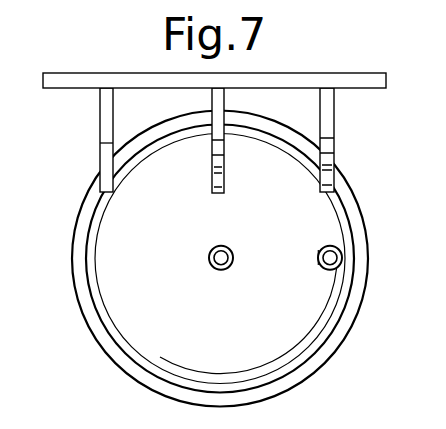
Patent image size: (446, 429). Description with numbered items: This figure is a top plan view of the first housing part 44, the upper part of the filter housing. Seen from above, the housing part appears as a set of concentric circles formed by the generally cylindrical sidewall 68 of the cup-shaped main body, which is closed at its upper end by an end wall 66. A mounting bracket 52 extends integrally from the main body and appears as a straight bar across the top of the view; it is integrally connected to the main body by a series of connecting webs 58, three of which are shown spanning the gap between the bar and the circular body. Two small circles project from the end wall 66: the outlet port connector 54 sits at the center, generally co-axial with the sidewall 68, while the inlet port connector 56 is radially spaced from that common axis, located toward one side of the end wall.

The first housing part 44 is at (66, 300).
The mounting bracket 52 is at (286, 73).
The outlet port connector 54 is at (217, 270).
The inlet port connector 56 is at (322, 268).
The connecting webs 58 is at (100, 117).
The end wall 66 is at (160, 347).
The sidewall 68 is at (88, 329).